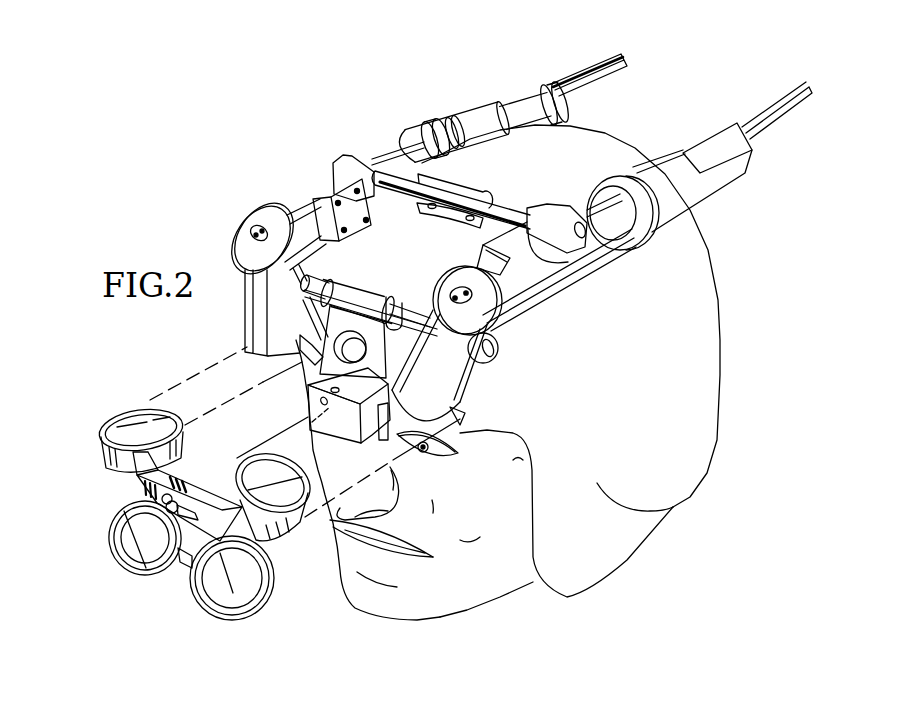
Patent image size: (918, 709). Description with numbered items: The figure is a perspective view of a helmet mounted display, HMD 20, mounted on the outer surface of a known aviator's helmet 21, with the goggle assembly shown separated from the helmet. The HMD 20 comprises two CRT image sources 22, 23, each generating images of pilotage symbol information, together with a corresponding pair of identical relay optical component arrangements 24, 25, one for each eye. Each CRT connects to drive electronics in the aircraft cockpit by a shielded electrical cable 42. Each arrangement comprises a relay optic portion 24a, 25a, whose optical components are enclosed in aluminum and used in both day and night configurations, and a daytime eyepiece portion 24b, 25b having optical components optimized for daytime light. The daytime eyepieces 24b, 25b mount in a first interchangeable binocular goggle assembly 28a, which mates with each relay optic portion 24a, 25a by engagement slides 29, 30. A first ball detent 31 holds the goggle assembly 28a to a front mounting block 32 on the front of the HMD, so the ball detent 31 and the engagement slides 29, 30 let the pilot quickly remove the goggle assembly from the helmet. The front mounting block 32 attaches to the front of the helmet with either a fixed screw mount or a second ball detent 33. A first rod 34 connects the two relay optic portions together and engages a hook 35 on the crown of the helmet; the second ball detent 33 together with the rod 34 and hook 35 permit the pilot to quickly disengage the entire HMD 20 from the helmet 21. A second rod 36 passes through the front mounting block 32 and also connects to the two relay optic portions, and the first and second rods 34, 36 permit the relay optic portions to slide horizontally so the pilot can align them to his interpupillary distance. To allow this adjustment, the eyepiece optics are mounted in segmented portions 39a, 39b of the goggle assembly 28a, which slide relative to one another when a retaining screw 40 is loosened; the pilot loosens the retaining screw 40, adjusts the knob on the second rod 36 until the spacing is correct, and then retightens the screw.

The HMD 20 is at (232, 204).
The aviator's helmet 21 is at (693, 423).
The CRT image source 22 is at (503, 100).
The CRT image source 23 is at (717, 130).
The relay optical component arrangement 24 is at (388, 137).
The relay optic portion 24a is at (320, 192).
The daytime eyepiece portion 24b is at (127, 563).
The relay optical component arrangement 25 is at (601, 282).
The relay optic portion 25a is at (517, 257).
The daytime eyepiece portion 25b is at (218, 620).
The first interchangeable binocular goggle assembly 28a is at (182, 563).
The engagement slide 29 is at (143, 411).
The engagement slide 30 is at (293, 500).
The first ball detent 31 is at (350, 430).
The front mounting block 32 is at (353, 290).
The second ball detent 33 is at (309, 322).
The first rod 34 is at (513, 207).
The hook 35 is at (463, 193).
The second rod 36 is at (413, 318).
The segmented portion 39a is at (140, 477).
The segmented portion 39b is at (200, 493).
The retaining screw 40 is at (180, 513).
The shielded electrical cable 42 is at (587, 63).